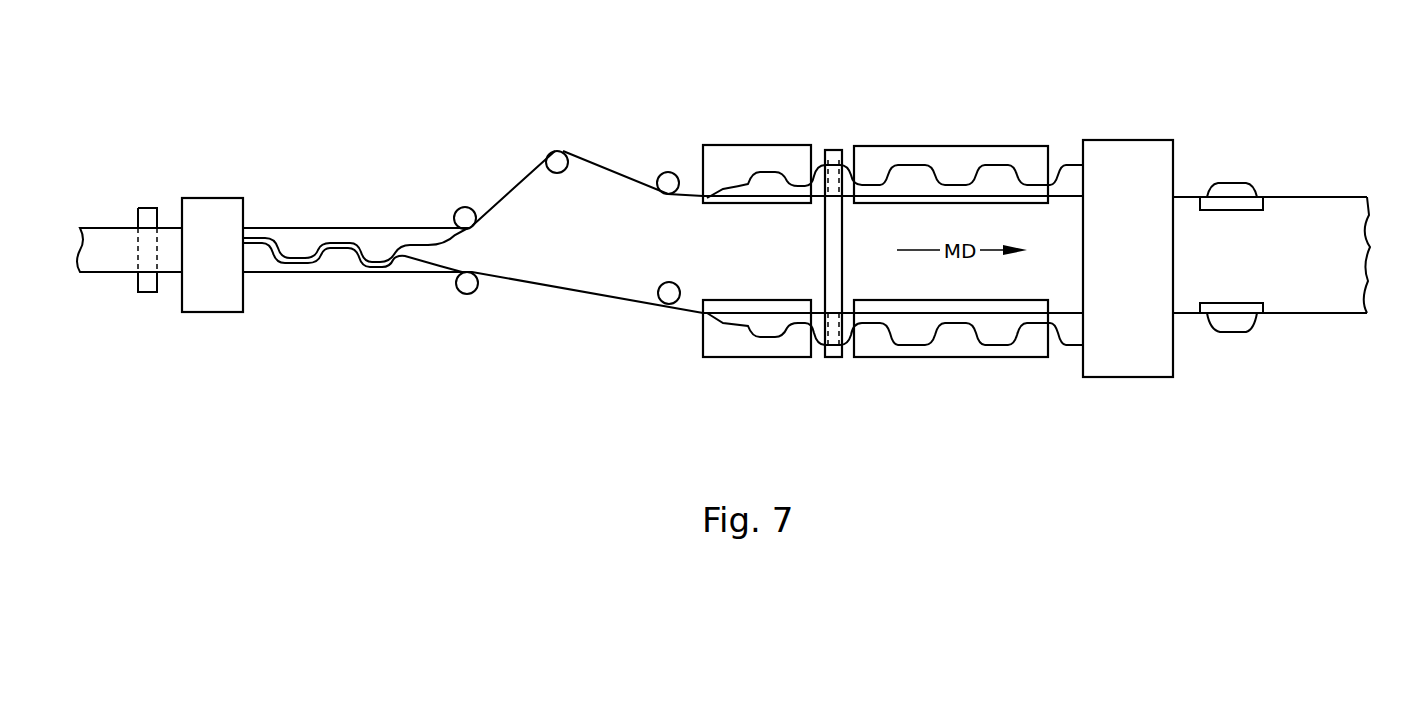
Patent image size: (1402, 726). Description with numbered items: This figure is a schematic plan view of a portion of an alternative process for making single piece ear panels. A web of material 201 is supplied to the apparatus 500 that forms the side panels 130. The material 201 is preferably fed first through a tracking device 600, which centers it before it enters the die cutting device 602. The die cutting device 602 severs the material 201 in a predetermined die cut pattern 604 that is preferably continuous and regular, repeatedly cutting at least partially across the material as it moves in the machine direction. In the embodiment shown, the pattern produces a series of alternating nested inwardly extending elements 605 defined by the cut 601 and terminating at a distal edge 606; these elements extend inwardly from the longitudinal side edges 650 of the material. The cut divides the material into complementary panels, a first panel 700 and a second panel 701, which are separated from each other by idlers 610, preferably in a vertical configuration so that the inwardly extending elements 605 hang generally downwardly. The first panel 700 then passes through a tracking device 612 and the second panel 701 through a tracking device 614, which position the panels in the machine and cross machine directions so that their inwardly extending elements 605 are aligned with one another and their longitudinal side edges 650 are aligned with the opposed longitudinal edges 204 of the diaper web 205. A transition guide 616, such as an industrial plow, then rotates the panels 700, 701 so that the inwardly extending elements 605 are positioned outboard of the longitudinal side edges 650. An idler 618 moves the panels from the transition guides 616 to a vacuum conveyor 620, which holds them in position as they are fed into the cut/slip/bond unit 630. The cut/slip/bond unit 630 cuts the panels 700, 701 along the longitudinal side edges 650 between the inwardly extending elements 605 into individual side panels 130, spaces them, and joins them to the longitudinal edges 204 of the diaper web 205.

The web of material 201 is at (112, 262).
The tracking device 600 is at (151, 212).
The die cutting device 602 is at (205, 313).
The longitudinal side edges 650 is at (407, 230).
The inwardly extending elements 605 is at (256, 240).
The die cut pattern 604 is at (275, 250).
The cut 601 is at (340, 245).
The idlers 610 is at (470, 210).
The second panel 701 is at (340, 235).
The first panel 700 is at (385, 275).
The tracking device 614 is at (672, 172).
The tracking device 612 is at (667, 303).
The transition guide 616 is at (745, 153).
The idler 618 is at (832, 150).
The distal edge 606 is at (920, 163).
The vacuum conveyor 620 is at (1015, 152).
The cut/slip/bond unit 630 is at (1152, 372).
The longitudinal edges 204 is at (1283, 197).
The diaper web 205 is at (1312, 232).
The side panels 130 is at (1220, 190).
The apparatus 500 is at (455, 446).